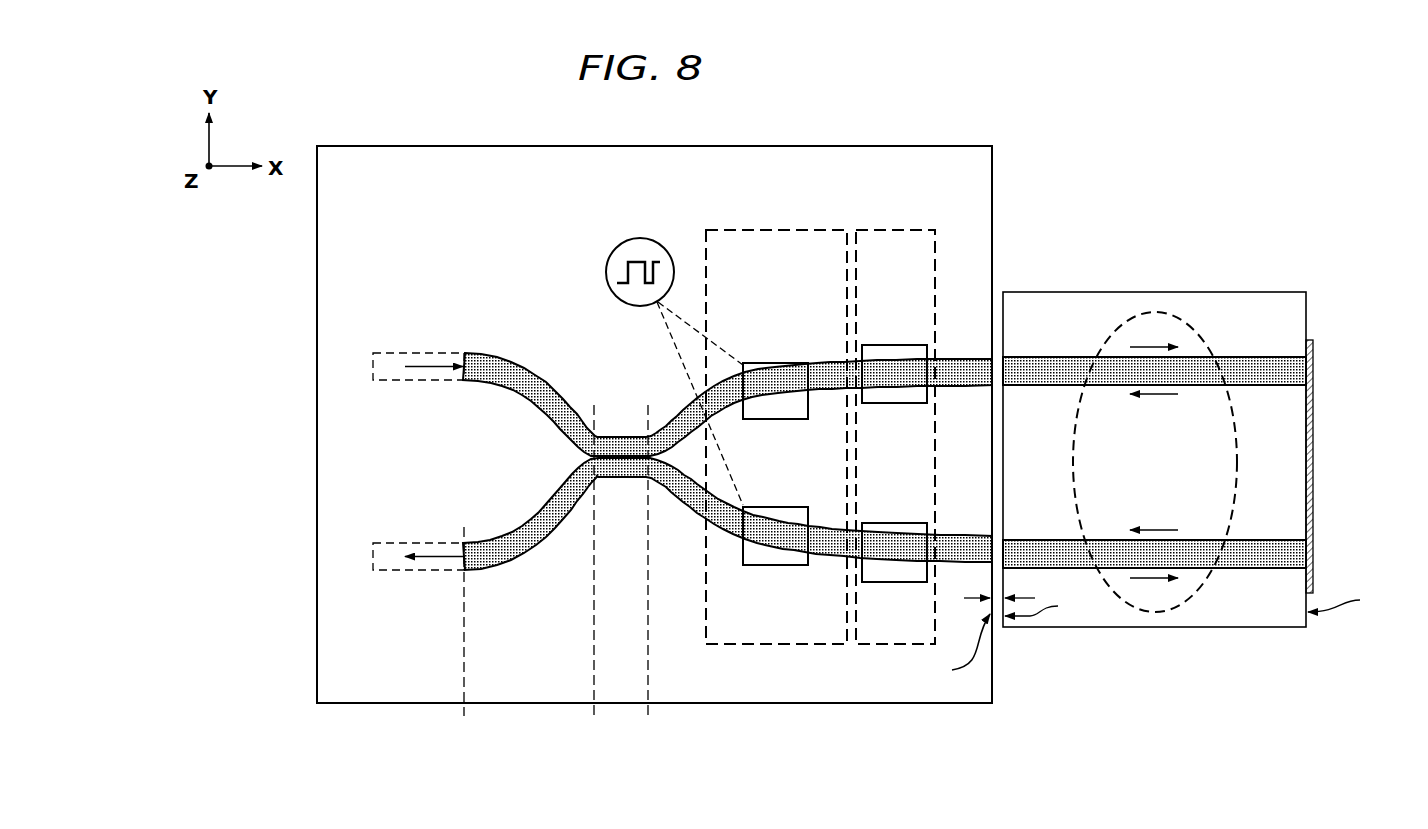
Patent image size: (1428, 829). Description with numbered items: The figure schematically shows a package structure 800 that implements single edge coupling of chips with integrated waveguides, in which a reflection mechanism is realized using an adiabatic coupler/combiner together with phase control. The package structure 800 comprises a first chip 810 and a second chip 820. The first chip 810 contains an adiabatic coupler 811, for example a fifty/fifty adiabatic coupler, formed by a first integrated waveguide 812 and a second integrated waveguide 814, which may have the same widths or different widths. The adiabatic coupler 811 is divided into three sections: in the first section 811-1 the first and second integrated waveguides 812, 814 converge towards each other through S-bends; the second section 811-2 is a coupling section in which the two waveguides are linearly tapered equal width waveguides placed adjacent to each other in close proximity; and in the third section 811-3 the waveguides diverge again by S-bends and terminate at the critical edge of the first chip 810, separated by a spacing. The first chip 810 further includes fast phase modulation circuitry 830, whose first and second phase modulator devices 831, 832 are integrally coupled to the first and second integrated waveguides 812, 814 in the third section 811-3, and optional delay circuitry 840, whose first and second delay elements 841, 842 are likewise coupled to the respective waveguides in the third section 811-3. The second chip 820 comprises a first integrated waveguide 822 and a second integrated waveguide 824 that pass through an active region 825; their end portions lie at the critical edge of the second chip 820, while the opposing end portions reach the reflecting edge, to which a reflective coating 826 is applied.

The package structure 800 is at (657, 119).
The first chip 810 is at (903, 146).
The adiabatic coupler 811 is at (992, 775).
The first section 811-1 is at (594, 718).
The second section 811-2 is at (648, 718).
The third section 811-3 is at (992, 718).
The first integrated waveguide 812 is at (483, 352).
The second integrated waveguide 814 is at (483, 541).
The second chip 820 is at (1175, 292).
The first integrated waveguide 822 is at (1258, 357).
The second integrated waveguide 824 is at (1268, 540).
The active region 825 is at (1103, 345).
The reflective coating 826 is at (1316, 398).
The fast phase modulation circuitry 830 is at (777, 230).
The first phase modulator device 831 is at (776, 363).
The second phase modulator device 832 is at (775, 567).
The delay circuitry 840 is at (896, 230).
The first delay element 841 is at (895, 345).
The second delay element 842 is at (894, 583).